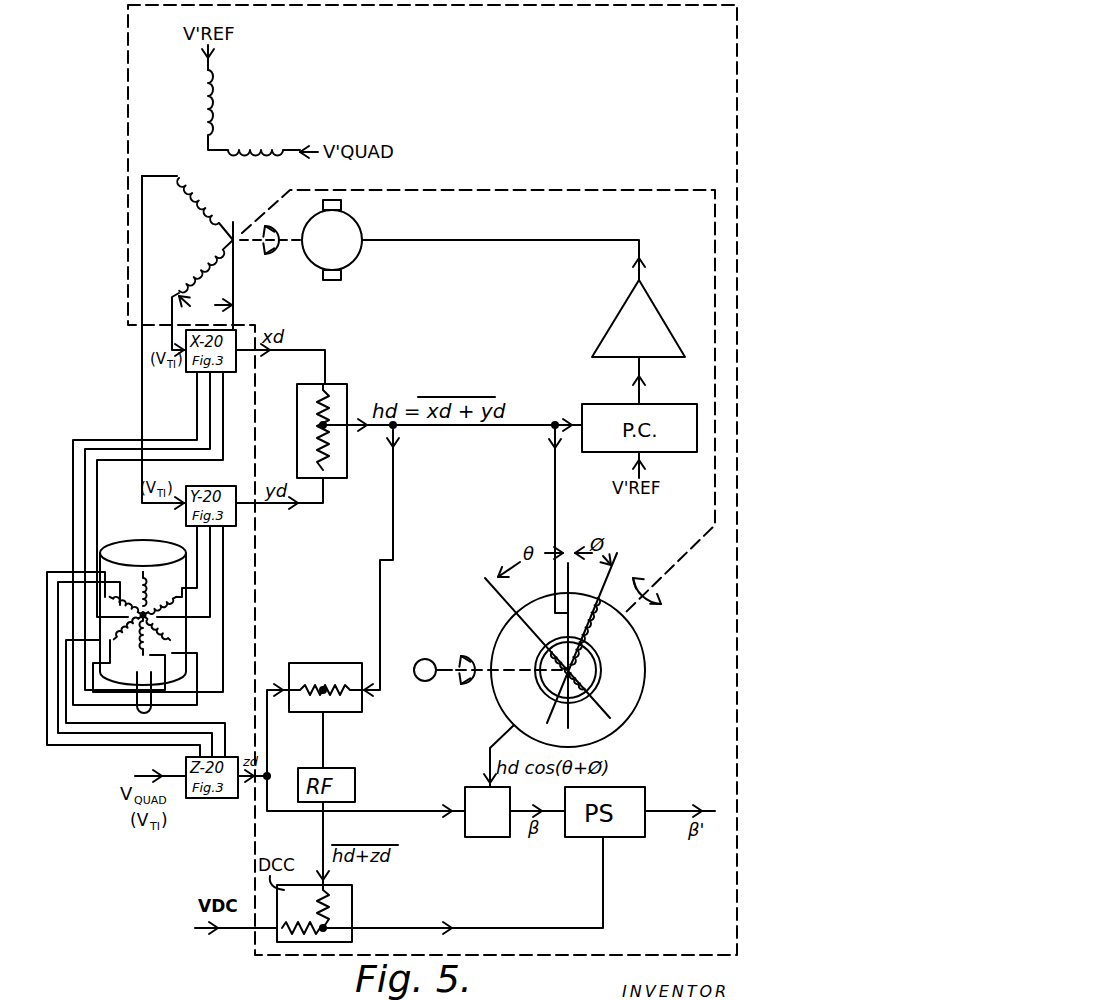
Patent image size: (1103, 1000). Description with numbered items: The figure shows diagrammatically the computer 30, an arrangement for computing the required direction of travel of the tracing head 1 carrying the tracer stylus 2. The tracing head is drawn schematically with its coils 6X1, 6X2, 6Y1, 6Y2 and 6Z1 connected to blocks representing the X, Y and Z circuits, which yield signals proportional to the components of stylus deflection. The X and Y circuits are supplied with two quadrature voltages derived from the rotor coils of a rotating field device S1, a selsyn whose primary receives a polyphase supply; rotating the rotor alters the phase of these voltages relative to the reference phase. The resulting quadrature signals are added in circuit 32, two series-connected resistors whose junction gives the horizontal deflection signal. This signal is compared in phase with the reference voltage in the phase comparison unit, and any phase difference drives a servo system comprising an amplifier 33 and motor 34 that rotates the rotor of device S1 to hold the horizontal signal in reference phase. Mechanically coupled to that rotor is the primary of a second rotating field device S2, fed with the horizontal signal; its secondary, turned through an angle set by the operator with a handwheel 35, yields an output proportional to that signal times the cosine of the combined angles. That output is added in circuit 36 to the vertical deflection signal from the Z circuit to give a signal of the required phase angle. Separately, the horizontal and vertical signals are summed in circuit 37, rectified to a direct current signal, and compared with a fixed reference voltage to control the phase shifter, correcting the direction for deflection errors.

The three-axis resolver 1 is at (167, 545).
The tracer stylus 2 is at (152, 706).
The computer 30 is at (668, 955).
The circuit 32 is at (345, 446).
The amplifier 33 is at (625, 327).
The motor 34 is at (340, 257).
The handwheel 35 is at (425, 659).
The circuit 36 is at (470, 792).
The circuit 37 is at (322, 672).
The coil 6Z1 is at (138, 580).
The coil 6X1 is at (172, 640).
The coil 6X2 is at (108, 596).
The coil 6Y1 is at (180, 597).
The coil 6Y2 is at (113, 640).
The rotating field device S1 is at (222, 266).
The rotating field device S2 is at (637, 703).